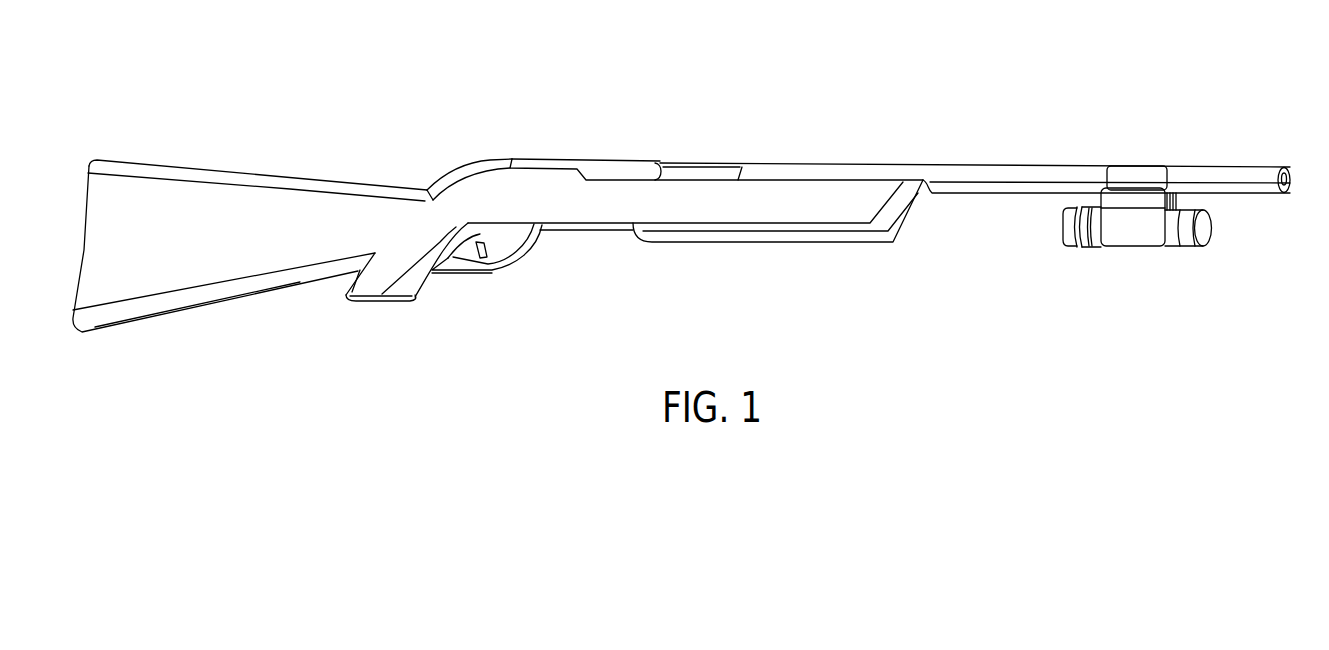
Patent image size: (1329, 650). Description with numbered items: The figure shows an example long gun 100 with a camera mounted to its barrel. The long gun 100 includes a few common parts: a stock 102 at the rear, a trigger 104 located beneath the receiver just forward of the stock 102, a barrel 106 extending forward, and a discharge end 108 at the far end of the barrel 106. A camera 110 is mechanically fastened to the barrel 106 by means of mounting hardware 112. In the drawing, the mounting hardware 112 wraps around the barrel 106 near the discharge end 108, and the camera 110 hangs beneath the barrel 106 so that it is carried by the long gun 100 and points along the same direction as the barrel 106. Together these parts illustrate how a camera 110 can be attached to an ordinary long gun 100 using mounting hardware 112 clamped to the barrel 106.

The long gun 100 is at (698, 169).
The stock 102 is at (197, 202).
The trigger 104 is at (483, 258).
The barrel 106 is at (1075, 181).
The discharge end 108 is at (1287, 193).
The camera 110 is at (1115, 248).
The mounting hardware 112 is at (1070, 220).